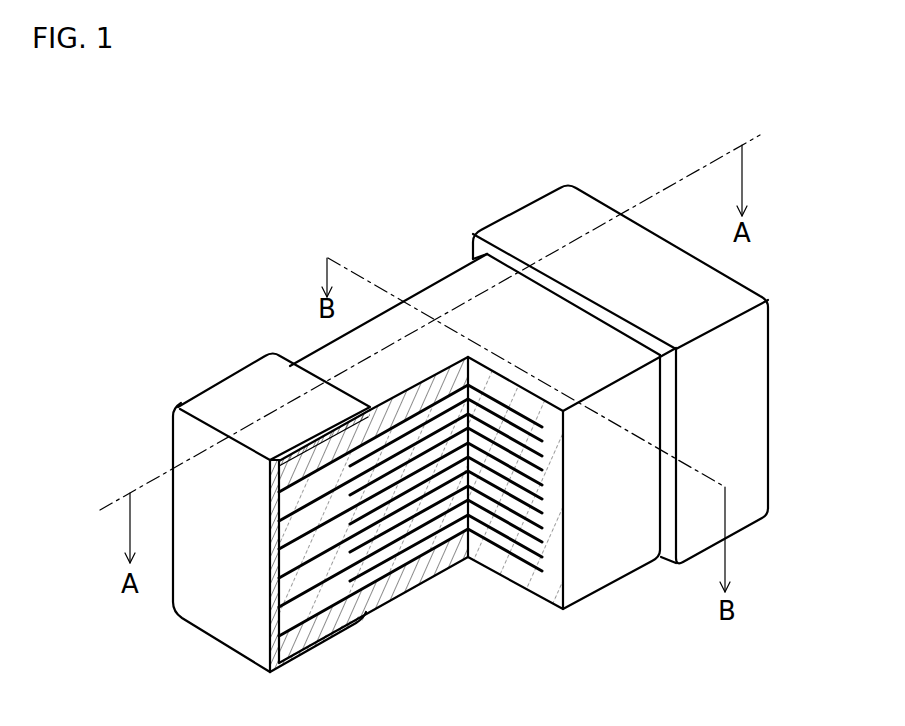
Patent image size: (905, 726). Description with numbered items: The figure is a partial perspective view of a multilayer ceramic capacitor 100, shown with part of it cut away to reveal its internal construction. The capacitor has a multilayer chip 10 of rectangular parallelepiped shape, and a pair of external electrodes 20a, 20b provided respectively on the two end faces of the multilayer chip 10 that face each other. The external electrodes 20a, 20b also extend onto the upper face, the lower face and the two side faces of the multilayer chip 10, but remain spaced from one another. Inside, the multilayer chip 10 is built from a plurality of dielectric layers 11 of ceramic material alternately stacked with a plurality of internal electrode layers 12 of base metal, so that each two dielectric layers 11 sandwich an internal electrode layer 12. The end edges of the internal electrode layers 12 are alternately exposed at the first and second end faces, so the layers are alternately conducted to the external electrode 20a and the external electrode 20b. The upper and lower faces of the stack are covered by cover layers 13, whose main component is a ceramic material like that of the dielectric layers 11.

The multilayer ceramic capacitor 100 is at (821, 118).
The multilayer chip 10 is at (313, 350).
The dielectric layer 11 is at (393, 567).
The internal electrode layer 12 is at (370, 612).
The cover layer 13 is at (438, 298).
The external electrode 20a is at (200, 393).
The external electrode 20b is at (523, 227).